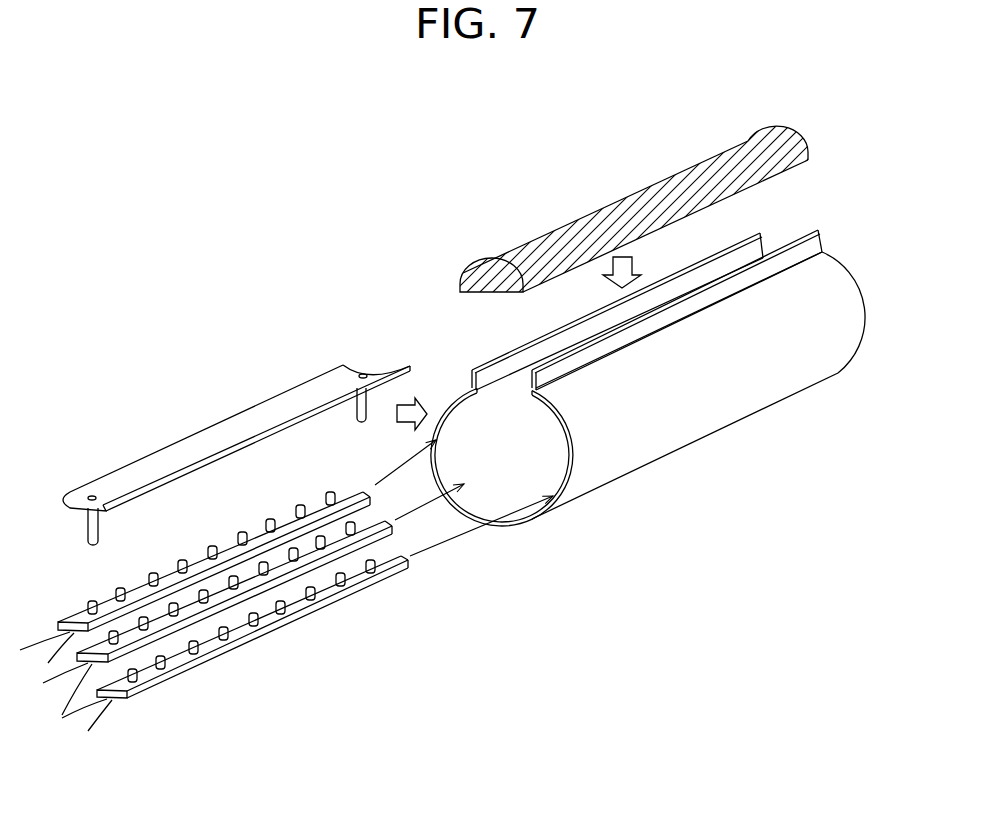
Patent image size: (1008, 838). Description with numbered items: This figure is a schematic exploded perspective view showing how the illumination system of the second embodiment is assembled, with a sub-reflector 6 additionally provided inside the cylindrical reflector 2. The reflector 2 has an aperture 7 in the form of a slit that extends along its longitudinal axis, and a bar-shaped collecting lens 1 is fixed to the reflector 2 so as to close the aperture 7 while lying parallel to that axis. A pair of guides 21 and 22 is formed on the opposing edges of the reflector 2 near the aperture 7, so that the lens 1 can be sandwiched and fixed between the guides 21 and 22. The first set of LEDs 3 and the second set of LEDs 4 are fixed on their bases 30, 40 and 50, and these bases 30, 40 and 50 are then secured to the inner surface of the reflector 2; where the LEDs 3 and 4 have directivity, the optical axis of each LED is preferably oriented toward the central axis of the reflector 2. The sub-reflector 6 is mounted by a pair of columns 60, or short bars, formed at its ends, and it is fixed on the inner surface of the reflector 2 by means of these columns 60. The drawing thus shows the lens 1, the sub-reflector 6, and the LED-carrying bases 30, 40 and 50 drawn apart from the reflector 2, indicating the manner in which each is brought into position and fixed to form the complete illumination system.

The collecting lens 1 is at (587, 215).
The reflector 2 is at (707, 428).
The first set of LEDs 3 is at (287, 658).
The second set of LEDs 4 is at (200, 612).
The sub-reflector 6 is at (243, 418).
The aperture 7 is at (513, 395).
The guide 21 is at (818, 243).
The guide 22 is at (762, 240).
The base 30 is at (72, 623).
The base 40 is at (98, 661).
The base 50 is at (160, 676).
The column 60 is at (357, 407).